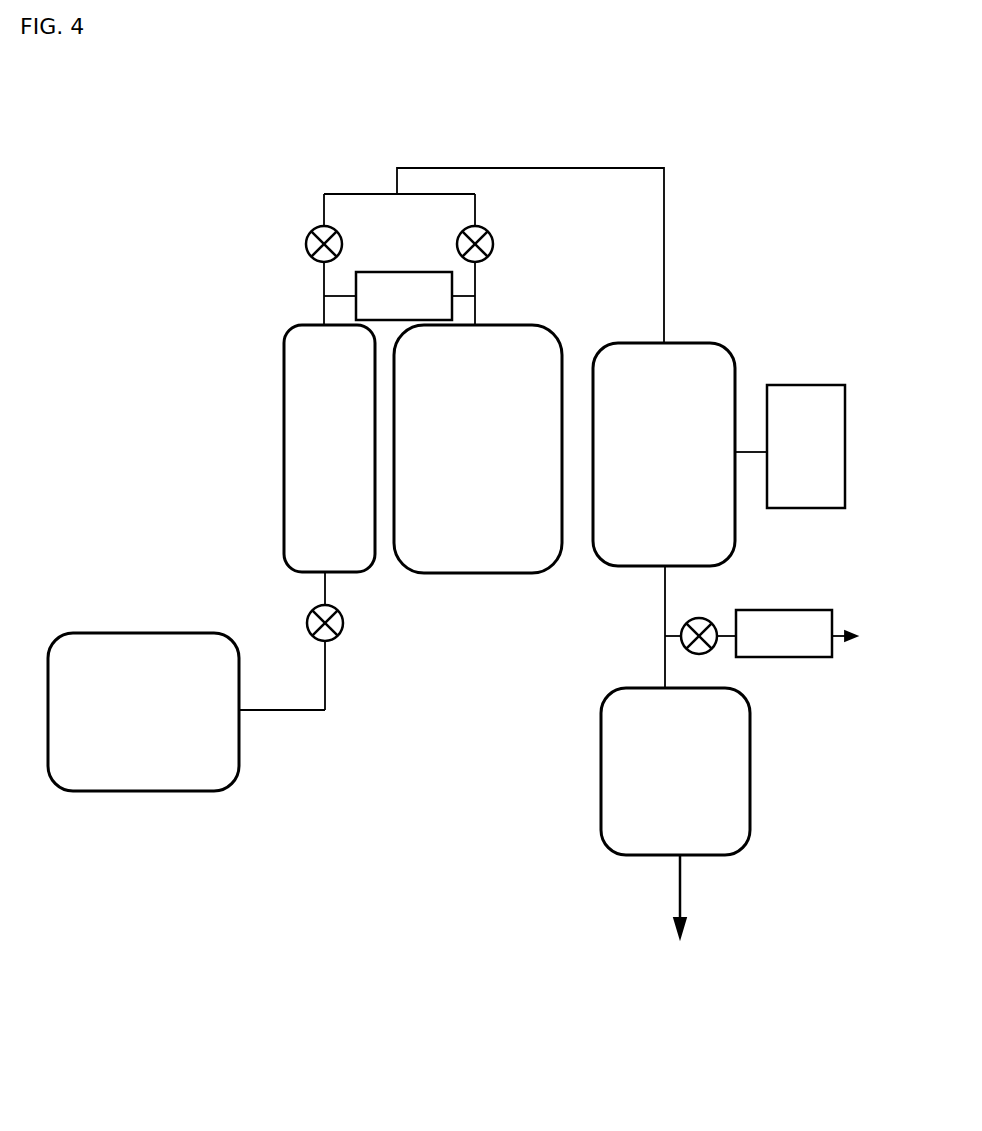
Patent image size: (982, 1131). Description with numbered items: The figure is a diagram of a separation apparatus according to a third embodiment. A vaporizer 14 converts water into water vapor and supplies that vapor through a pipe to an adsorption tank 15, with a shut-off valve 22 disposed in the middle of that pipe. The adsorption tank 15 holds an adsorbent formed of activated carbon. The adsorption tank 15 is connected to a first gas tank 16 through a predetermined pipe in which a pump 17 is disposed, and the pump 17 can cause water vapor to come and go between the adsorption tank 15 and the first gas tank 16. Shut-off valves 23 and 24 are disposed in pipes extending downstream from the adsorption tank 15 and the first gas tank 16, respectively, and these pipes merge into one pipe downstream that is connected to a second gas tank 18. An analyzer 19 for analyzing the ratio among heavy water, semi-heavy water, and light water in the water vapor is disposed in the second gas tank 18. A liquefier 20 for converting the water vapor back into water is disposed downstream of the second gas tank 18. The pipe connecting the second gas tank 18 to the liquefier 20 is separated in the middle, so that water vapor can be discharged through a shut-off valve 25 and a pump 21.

The vaporizer 14 is at (239, 758).
The adsorption tank 15 is at (284, 455).
The first gas tank 16 is at (497, 574).
The pump 17 is at (395, 272).
The second gas tank 18 is at (692, 343).
The analyzer 19 is at (845, 452).
The liquefier 20 is at (750, 790).
The pump 21 is at (796, 657).
The shut-off valve 22 is at (343, 623).
The shut-off valve 23 is at (306, 244).
The shut-off valve 24 is at (494, 244).
The shut-off valve 25 is at (703, 618).